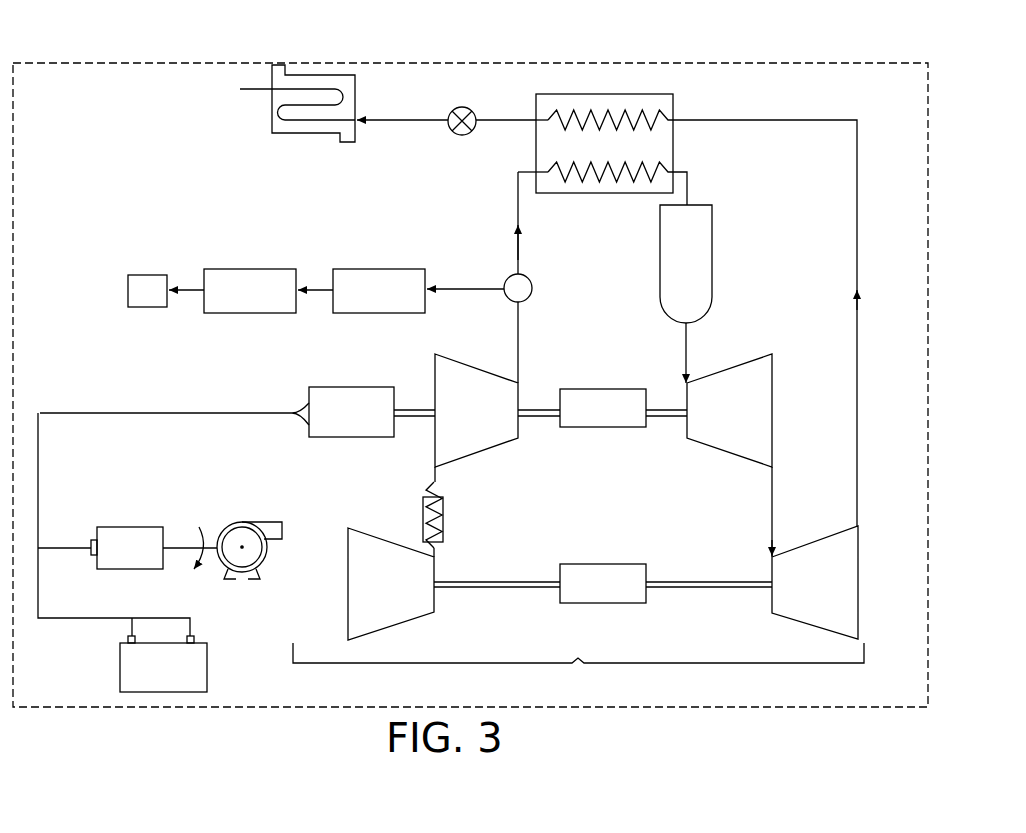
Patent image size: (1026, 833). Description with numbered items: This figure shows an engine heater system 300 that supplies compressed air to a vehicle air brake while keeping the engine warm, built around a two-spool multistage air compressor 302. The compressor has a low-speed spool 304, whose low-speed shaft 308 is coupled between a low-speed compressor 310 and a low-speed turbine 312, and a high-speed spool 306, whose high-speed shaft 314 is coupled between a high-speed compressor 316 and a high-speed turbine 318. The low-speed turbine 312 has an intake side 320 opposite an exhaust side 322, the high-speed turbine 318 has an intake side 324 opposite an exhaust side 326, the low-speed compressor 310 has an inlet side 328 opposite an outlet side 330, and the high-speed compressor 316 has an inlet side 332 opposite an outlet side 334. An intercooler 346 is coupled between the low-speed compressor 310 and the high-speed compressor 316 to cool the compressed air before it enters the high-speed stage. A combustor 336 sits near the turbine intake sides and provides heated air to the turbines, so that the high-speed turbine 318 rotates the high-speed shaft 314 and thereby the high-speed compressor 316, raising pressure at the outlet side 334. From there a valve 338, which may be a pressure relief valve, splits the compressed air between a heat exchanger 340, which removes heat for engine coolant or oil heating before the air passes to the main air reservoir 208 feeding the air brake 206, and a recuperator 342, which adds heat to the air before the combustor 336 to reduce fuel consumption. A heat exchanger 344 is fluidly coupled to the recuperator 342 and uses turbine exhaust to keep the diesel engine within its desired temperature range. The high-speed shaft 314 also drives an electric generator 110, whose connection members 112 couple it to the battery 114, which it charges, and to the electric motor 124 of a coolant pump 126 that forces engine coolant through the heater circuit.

The engine heater system 300 is at (105, 62).
The heat exchanger 344 is at (277, 137).
The recuperator 342 is at (600, 193).
The combustor 336 is at (712, 262).
The valve 338 is at (532, 286).
The heat exchanger 340 is at (375, 313).
The main air reservoir 208 is at (247, 313).
The air brake 206 is at (147, 307).
The electric generator 110 is at (351, 412).
The connection members 112 is at (295, 432).
The high-speed compressor 316 is at (476, 410).
The inlet side 332 is at (433, 370).
The outlet side 334 is at (521, 389).
The high-speed shaft 314 is at (541, 420).
The high-speed spool 306 is at (603, 408).
The high-speed turbine 318 is at (729, 410).
The intake side 324 is at (684, 388).
The exhaust side 326 is at (776, 390).
The intercooler 346 is at (443, 515).
The low-speed compressor 310 is at (391, 584).
The inlet side 328 is at (346, 625).
The outlet side 330 is at (438, 613).
The low-speed shaft 308 is at (540, 582).
The low-speed spool 304 is at (603, 583).
The low-speed turbine 312 is at (815, 582).
The intake side 320 is at (769, 558).
The exhaust side 322 is at (861, 562).
The two-spool multistage air compressor 302 is at (578, 666).
The electric motor 124 is at (121, 526).
The coolant pump 126 is at (222, 526).
The battery 114 is at (118, 662).